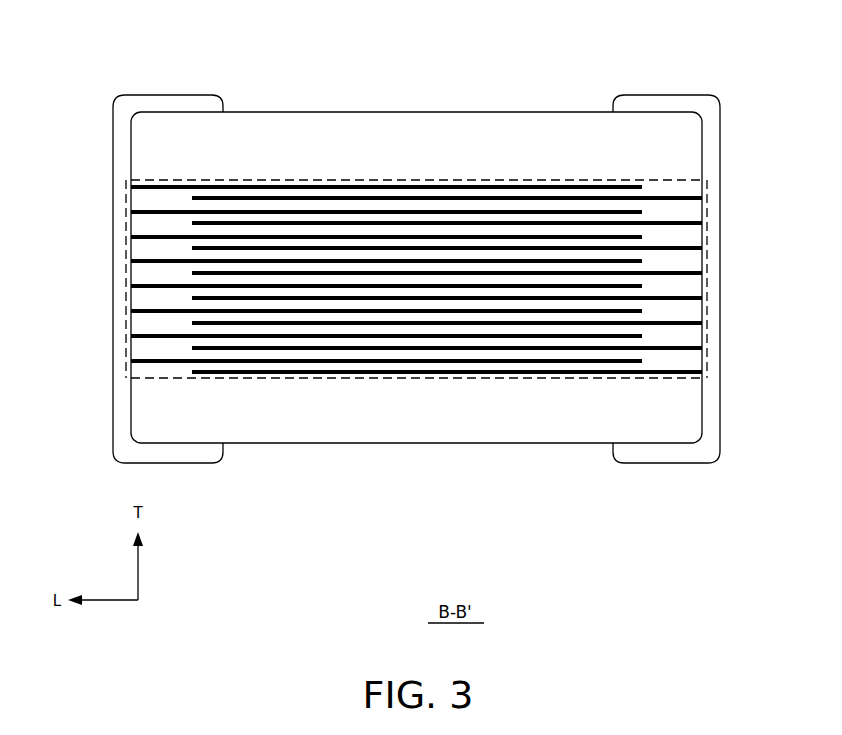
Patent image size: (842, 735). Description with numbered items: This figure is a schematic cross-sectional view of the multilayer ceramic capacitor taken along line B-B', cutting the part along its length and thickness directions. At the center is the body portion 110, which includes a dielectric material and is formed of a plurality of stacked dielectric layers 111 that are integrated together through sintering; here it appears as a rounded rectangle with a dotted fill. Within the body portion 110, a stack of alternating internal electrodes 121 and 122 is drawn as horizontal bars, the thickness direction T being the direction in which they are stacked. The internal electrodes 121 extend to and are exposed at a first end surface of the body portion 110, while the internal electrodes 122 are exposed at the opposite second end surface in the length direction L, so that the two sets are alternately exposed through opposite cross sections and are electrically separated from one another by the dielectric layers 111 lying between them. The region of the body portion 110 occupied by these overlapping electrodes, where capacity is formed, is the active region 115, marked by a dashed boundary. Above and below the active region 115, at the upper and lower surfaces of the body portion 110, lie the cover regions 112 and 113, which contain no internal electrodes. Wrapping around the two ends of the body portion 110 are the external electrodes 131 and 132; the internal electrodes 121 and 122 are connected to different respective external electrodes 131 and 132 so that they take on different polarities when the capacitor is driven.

The body portion 110 is at (530, 100).
The dielectric layers 111 is at (426, 185).
The cover region 112 is at (358, 137).
The cover region 113 is at (494, 425).
The active region 115 is at (284, 165).
The internal electrodes 121 is at (340, 203).
The internal electrodes 122 is at (695, 212).
The external electrode 131 is at (118, 168).
The external electrode 132 is at (712, 150).